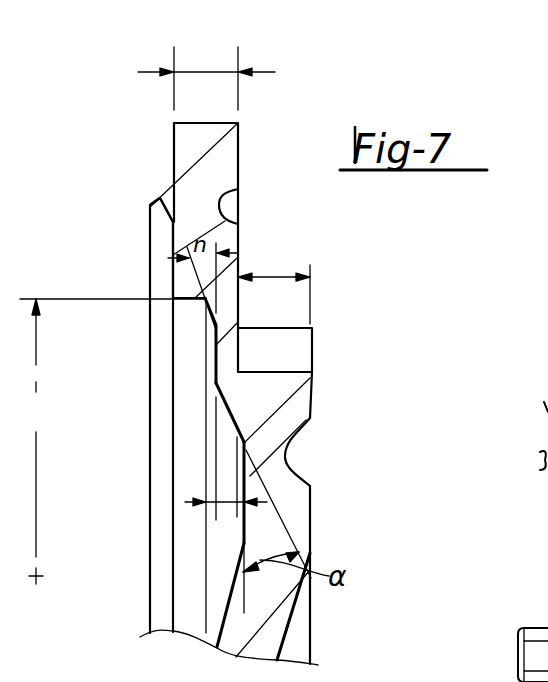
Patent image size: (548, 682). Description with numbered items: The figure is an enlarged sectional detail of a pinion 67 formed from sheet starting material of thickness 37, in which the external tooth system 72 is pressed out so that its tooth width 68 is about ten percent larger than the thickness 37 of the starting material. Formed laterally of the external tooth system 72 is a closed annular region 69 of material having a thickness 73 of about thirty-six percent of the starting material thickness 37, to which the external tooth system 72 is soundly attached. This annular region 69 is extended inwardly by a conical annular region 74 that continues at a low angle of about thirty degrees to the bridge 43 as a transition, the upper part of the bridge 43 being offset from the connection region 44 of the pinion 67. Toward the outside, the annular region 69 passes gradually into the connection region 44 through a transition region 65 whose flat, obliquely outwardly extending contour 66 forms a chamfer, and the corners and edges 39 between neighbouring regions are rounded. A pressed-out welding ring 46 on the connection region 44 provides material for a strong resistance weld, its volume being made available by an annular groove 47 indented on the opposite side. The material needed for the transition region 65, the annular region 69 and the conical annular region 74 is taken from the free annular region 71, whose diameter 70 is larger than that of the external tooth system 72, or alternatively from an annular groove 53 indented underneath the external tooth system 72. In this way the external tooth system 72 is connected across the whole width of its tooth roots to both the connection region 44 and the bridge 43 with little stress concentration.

The thickness of the starting material 37 is at (207, 72).
The corners and edges 39 is at (223, 387).
The bridge 43 is at (292, 515).
The connection region 44 is at (223, 150).
The welding ring 46 is at (177, 204).
The annular groove 47 is at (224, 203).
The annular groove 53 is at (302, 453).
The transition region 65 is at (225, 312).
The contour 66 is at (212, 318).
The pinion 67 is at (142, 280).
The tooth width 68 is at (276, 277).
The closed annular region 69 is at (226, 383).
The diameter 70 is at (111, 441).
The free annular region 71 is at (190, 573).
The external tooth system 72 is at (268, 363).
The thickness 73 is at (185, 502).
The conical annular region 74 is at (230, 388).